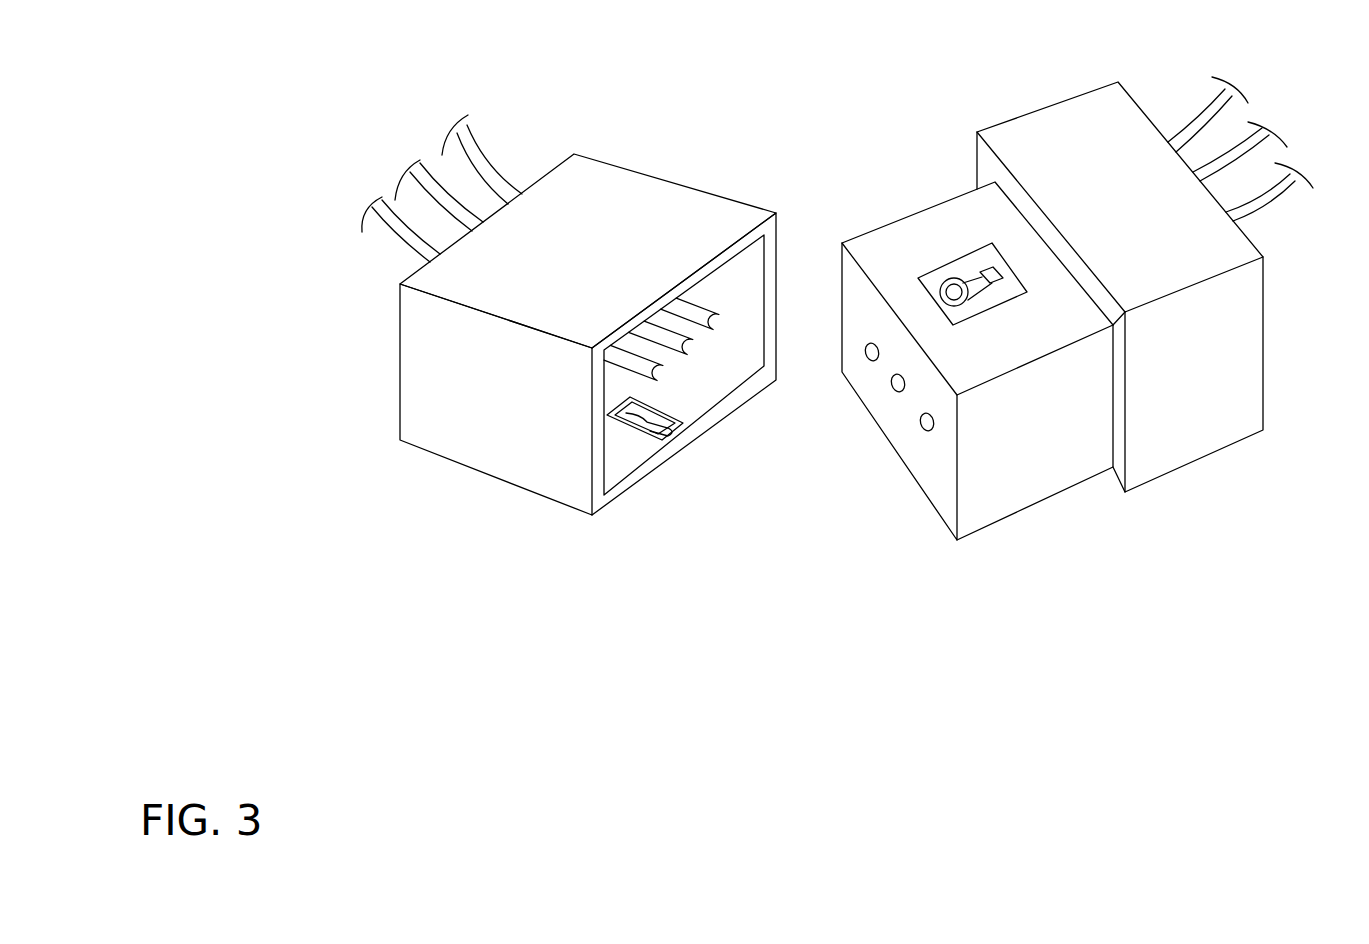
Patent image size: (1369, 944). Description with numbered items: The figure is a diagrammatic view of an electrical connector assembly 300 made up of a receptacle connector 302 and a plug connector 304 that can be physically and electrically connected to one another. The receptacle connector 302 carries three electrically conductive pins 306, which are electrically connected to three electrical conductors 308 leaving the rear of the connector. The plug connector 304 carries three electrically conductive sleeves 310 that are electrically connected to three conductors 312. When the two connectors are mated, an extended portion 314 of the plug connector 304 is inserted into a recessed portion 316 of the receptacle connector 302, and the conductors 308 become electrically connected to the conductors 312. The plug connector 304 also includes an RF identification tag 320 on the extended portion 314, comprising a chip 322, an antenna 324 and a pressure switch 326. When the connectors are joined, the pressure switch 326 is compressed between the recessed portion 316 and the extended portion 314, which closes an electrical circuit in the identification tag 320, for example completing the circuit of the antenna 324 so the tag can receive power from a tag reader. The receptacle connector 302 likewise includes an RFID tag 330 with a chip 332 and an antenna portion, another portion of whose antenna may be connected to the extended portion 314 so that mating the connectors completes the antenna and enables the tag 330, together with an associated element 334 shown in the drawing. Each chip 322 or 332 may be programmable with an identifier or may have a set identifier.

The electrical connector assembly 300 is at (935, 110).
The receptacle connector 302 is at (472, 458).
The plug connector 304 is at (1222, 448).
The electrically conductive pins 306 is at (698, 345).
The electrical conductors 308 is at (477, 162).
The electrically conductive sleeves 310 is at (872, 344).
The conductors 312 is at (1203, 112).
The extended portion 314 is at (1050, 496).
The recessed portion 316 is at (754, 259).
The RF identification tag 320 is at (970, 248).
The chip 322 is at (1008, 296).
The antenna 324 is at (965, 306).
The pressure switch 326 is at (945, 294).
The RFID tag 330 is at (683, 421).
The chip 332 is at (628, 417).
The catch tab 334 is at (672, 436).